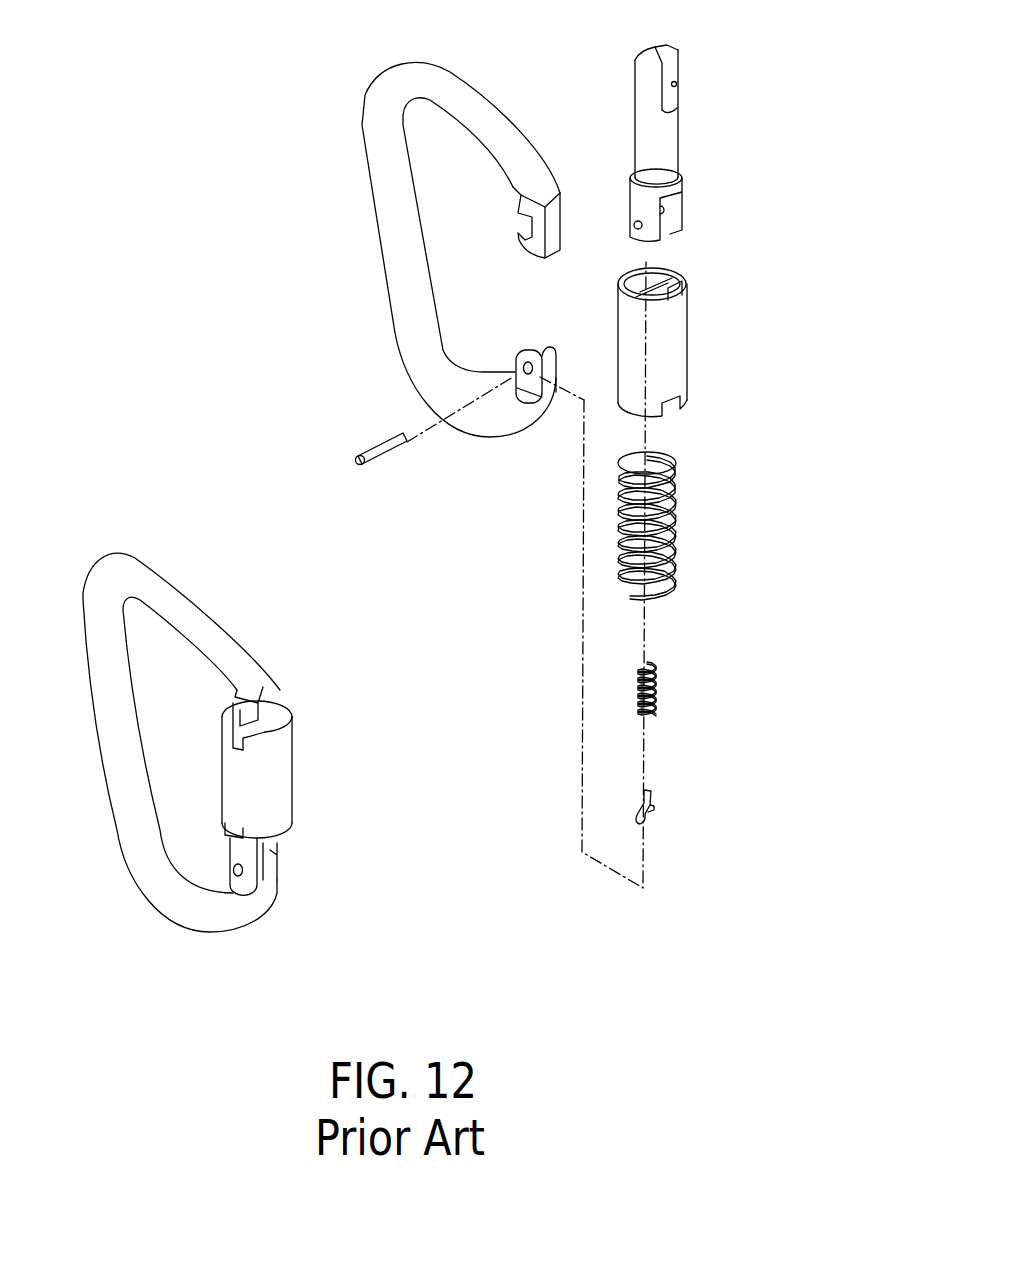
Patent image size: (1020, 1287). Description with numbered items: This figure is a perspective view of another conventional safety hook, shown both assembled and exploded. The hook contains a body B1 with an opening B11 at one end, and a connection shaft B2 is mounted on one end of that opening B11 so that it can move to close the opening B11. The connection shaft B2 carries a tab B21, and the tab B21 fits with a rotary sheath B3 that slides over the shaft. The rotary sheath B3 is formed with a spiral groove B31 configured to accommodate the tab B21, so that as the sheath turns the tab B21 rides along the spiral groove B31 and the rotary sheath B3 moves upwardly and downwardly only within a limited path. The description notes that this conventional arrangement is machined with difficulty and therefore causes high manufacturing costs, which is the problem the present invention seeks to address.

The body B1 is at (398, 267).
The opening B11 is at (556, 318).
The connection shaft B2 is at (496, 468).
The tab B21 is at (675, 85).
The rotary sheath B3 is at (493, 545).
The spiral groove B31 is at (648, 285).